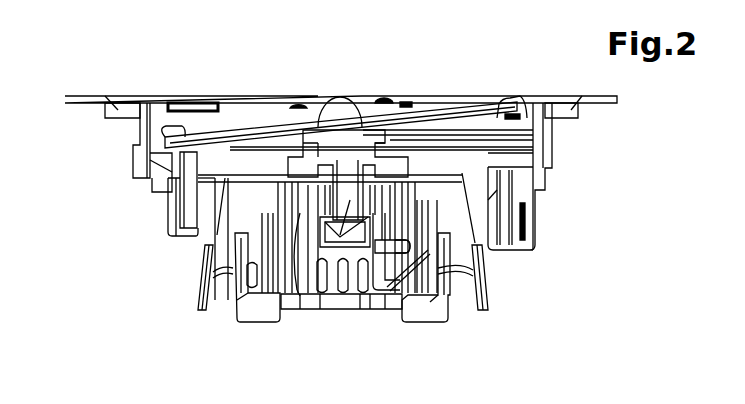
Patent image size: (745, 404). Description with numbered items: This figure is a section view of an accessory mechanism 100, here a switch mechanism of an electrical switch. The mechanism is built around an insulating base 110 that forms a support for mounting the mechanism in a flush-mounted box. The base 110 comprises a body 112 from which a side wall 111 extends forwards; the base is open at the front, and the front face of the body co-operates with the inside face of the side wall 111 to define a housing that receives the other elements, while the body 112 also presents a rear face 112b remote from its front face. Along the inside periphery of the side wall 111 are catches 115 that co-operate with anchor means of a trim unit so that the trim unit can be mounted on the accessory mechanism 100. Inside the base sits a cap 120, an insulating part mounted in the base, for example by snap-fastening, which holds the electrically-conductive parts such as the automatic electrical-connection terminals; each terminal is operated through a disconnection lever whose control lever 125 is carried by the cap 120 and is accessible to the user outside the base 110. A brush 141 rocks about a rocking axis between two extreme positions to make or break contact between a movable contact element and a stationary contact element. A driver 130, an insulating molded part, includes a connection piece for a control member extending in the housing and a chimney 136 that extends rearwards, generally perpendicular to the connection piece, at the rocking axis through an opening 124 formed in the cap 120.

The accessory mechanism 100 is at (106, 66).
The insulating base 110 is at (124, 140).
The side wall 111 is at (548, 138).
The body 112 is at (247, 300).
The rear face 112b is at (347, 310).
The catches 115 is at (193, 100).
The cap 120 is at (176, 210).
The opening 124 is at (390, 145).
The control lever 125 is at (485, 287).
The driver 130 is at (437, 107).
The chimney 136 is at (333, 222).
The brush 141 is at (302, 296).